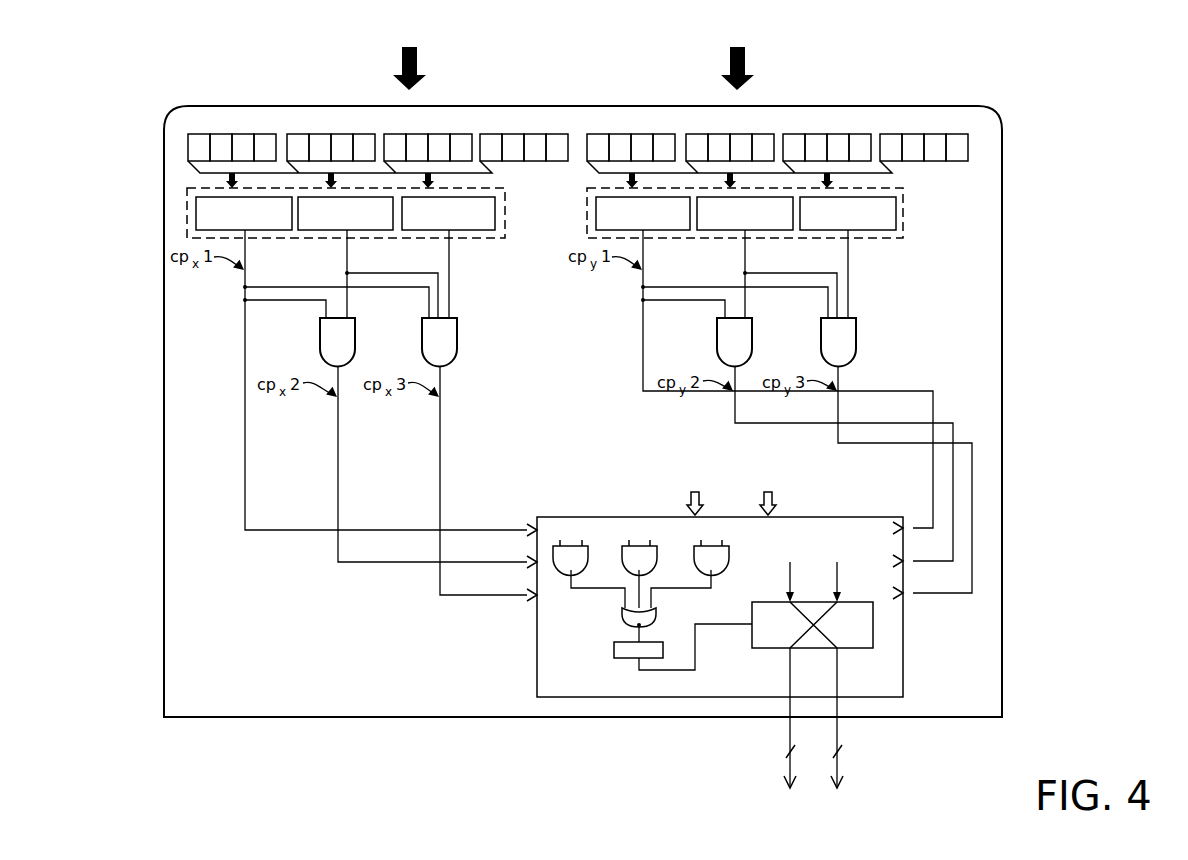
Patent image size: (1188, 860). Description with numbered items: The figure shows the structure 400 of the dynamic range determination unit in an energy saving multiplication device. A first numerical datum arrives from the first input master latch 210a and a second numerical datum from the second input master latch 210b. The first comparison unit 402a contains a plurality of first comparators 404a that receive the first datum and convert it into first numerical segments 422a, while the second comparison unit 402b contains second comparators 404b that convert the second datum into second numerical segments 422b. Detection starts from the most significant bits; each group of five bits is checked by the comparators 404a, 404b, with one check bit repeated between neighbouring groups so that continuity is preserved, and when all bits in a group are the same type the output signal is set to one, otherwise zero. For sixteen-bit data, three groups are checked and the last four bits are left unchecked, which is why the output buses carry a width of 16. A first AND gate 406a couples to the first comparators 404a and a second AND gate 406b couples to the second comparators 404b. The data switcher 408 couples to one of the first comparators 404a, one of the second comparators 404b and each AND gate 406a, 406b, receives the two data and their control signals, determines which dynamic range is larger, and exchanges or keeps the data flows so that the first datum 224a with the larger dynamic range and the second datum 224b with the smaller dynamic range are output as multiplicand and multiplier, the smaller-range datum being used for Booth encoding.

The comparison circuit 400 is at (298, 717).
The first input master latch 210a is at (418, 62).
The second input master latch 210b is at (746, 62).
The first numerical segments 422a is at (229, 185).
The second numerical segments 422b is at (832, 184).
The first comparison unit 402a is at (385, 239).
The second comparison unit 402b is at (785, 239).
The first comparators 404a is at (490, 238).
The second comparators 404b is at (890, 238).
The first AND gate 406a is at (319, 338).
The second AND gate 406b is at (716, 338).
The data switcher 408 is at (903, 662).
The first datum 224a is at (781, 767).
The second datum 224b is at (846, 767).
The 16-bit bus width 16 is at (813, 747).